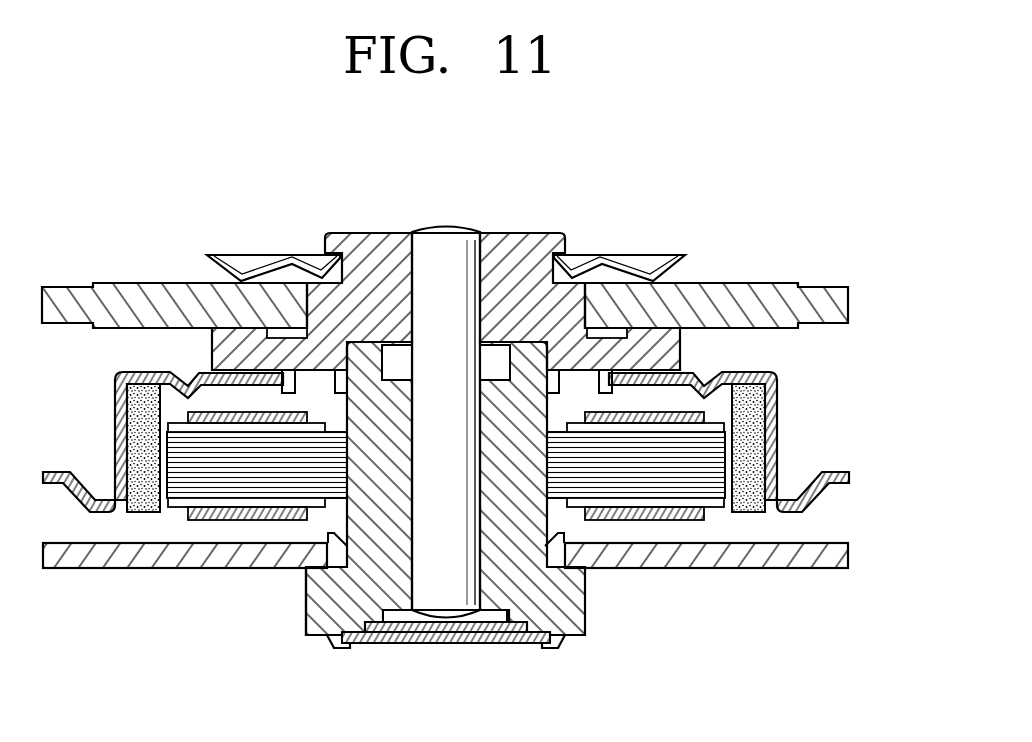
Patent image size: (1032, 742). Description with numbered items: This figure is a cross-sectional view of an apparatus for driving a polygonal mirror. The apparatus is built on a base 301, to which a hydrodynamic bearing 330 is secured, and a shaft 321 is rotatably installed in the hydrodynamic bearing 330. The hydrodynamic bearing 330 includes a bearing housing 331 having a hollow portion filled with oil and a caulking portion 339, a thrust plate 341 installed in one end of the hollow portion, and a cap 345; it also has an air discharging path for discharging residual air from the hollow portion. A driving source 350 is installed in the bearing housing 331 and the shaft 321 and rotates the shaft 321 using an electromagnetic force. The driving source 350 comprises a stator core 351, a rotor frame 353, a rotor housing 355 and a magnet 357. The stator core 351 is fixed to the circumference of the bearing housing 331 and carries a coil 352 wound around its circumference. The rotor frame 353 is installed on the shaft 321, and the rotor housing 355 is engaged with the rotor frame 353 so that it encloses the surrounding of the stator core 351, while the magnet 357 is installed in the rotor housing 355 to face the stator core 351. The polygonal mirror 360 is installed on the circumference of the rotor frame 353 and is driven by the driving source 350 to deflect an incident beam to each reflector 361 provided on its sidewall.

The base 301 is at (788, 568).
The shaft 321 is at (432, 250).
The hydrodynamic bearing 330 is at (293, 622).
The bearing housing 331 is at (312, 625).
The caulking portion 339 is at (548, 650).
The thrust plate 341 is at (387, 633).
The cap 345 is at (460, 645).
The driving source 350 is at (693, 526).
The stator core 351 is at (605, 486).
The coil 352 is at (650, 513).
The rotor frame 353 is at (680, 349).
The rotor housing 355 is at (777, 400).
The magnet 357 is at (750, 440).
The polygonal mirror 360 is at (734, 293).
The reflector 361 is at (848, 307).